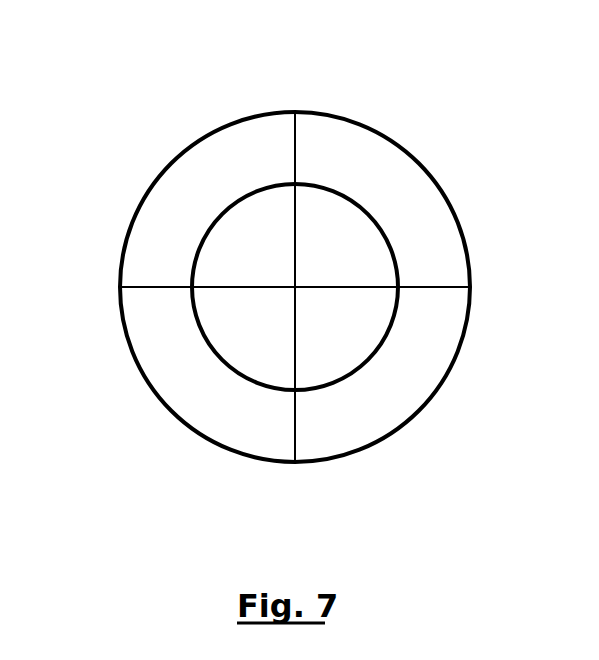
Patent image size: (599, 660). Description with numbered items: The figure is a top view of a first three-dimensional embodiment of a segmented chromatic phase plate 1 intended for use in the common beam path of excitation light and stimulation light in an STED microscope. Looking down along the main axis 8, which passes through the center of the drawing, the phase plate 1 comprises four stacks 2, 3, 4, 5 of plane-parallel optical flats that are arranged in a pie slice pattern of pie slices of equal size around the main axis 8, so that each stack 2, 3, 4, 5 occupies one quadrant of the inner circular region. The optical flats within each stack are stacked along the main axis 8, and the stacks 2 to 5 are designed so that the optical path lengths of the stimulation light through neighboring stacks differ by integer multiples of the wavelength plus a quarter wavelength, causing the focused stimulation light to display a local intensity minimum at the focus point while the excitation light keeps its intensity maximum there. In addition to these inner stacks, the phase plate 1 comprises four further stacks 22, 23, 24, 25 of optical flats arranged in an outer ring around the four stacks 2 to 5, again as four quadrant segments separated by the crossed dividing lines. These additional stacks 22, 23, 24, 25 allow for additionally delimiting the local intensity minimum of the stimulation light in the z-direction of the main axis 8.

The segmented chromatic phase plate 1 is at (404, 102).
The stack 2 is at (242, 243).
The stack 3 is at (357, 243).
The stack 4 is at (322, 360).
The stack 5 is at (265, 360).
The main axis 8 is at (295, 287).
The further stack 22 is at (212, 155).
The further stack 23 is at (340, 145).
The further stack 24 is at (433, 352).
The further stack 25 is at (162, 345).